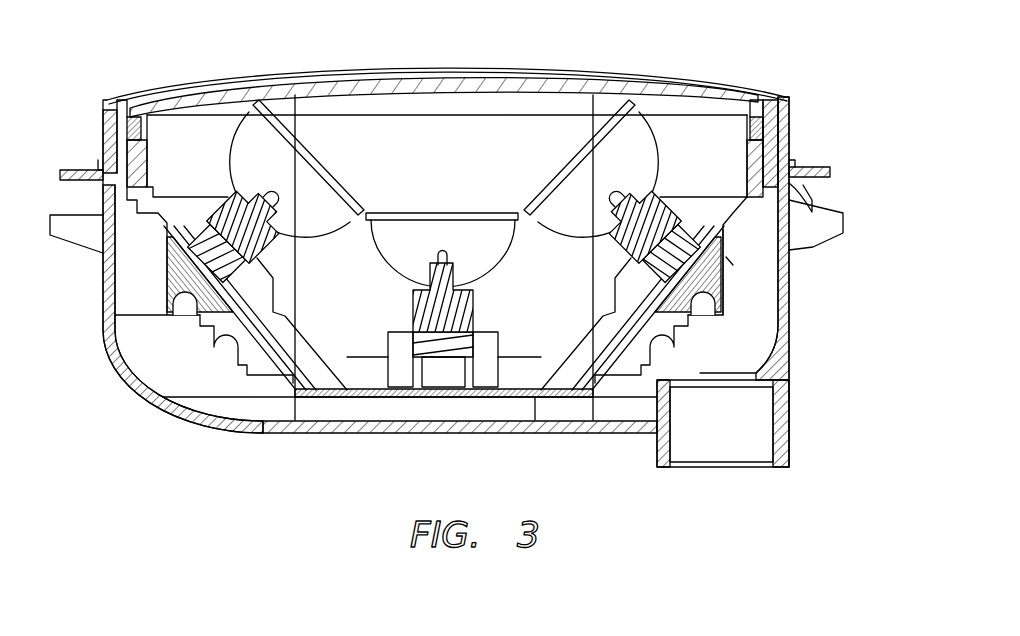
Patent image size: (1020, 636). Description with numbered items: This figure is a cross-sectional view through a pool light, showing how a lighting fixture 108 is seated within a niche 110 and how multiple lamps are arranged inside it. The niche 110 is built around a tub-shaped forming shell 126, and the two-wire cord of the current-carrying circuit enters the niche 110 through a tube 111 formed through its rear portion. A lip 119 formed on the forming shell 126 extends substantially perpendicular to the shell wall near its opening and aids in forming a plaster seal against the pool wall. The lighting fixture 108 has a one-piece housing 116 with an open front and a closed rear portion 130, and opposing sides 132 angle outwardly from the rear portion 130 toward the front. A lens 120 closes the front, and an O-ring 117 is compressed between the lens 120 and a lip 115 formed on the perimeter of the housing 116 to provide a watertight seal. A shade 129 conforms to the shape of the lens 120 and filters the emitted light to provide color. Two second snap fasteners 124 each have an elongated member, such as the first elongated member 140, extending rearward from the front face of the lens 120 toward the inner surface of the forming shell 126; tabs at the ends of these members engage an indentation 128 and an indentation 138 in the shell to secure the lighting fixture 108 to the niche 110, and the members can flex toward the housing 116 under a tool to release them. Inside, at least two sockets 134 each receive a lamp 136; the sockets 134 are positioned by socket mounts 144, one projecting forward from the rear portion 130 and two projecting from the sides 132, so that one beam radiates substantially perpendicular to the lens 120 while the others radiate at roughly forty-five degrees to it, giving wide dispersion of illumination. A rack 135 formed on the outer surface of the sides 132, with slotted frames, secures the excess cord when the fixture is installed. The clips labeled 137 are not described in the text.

The lighting fixture 108 is at (766, 53).
The niche 110 is at (314, 441).
The tube 111 is at (735, 467).
The lip 115 is at (150, 138).
The housing 116 is at (731, 288).
The O-ring 117 is at (130, 116).
The lip 119 is at (800, 168).
The lens 120 is at (764, 102).
The second snap fastener 124 is at (152, 197).
The forming shell 126 is at (394, 434).
The indentation 128 is at (788, 243).
The shade 129 is at (656, 74).
The rear portion 130 is at (453, 400).
The sides 132 is at (297, 348).
The socket 134 is at (238, 268).
The rack 135 is at (726, 258).
The lamp 136 is at (232, 197).
The retaining clip 137 is at (200, 398).
The indentation 138 is at (102, 162).
The first elongated member 140 is at (795, 183).
The socket mount 144 is at (190, 222).